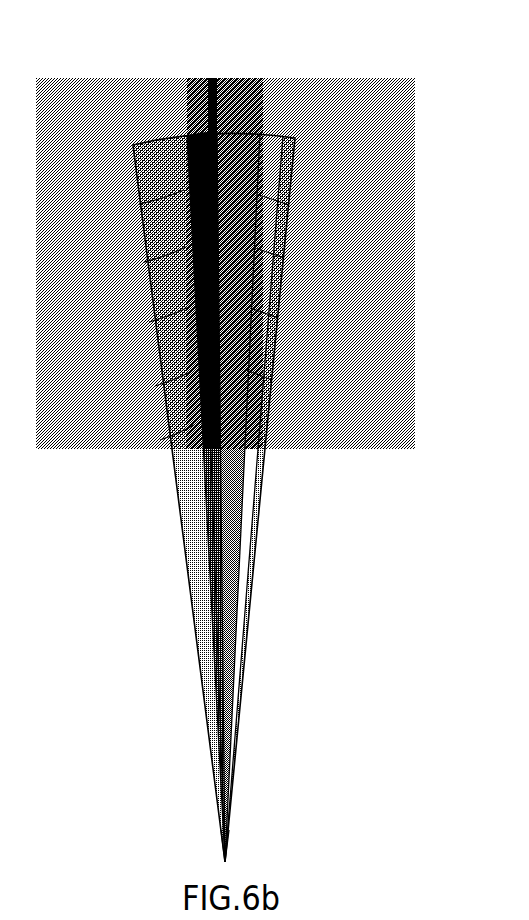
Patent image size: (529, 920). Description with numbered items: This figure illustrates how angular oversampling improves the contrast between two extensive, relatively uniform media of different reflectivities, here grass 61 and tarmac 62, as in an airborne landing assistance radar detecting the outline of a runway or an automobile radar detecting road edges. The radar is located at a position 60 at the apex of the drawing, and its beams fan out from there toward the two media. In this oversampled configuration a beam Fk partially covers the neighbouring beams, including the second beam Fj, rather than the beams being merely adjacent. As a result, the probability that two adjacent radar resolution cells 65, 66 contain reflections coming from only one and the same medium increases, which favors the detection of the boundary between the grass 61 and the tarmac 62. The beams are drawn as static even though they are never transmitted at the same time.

The radar position 60 is at (231, 857).
The grass 61 is at (362, 359).
The tarmac 62 is at (258, 107).
The radar resolution cell 65 is at (152, 158).
The radar resolution cell 66 is at (197, 135).
The beam Fk is at (228, 476).
The second beam Fj is at (190, 574).